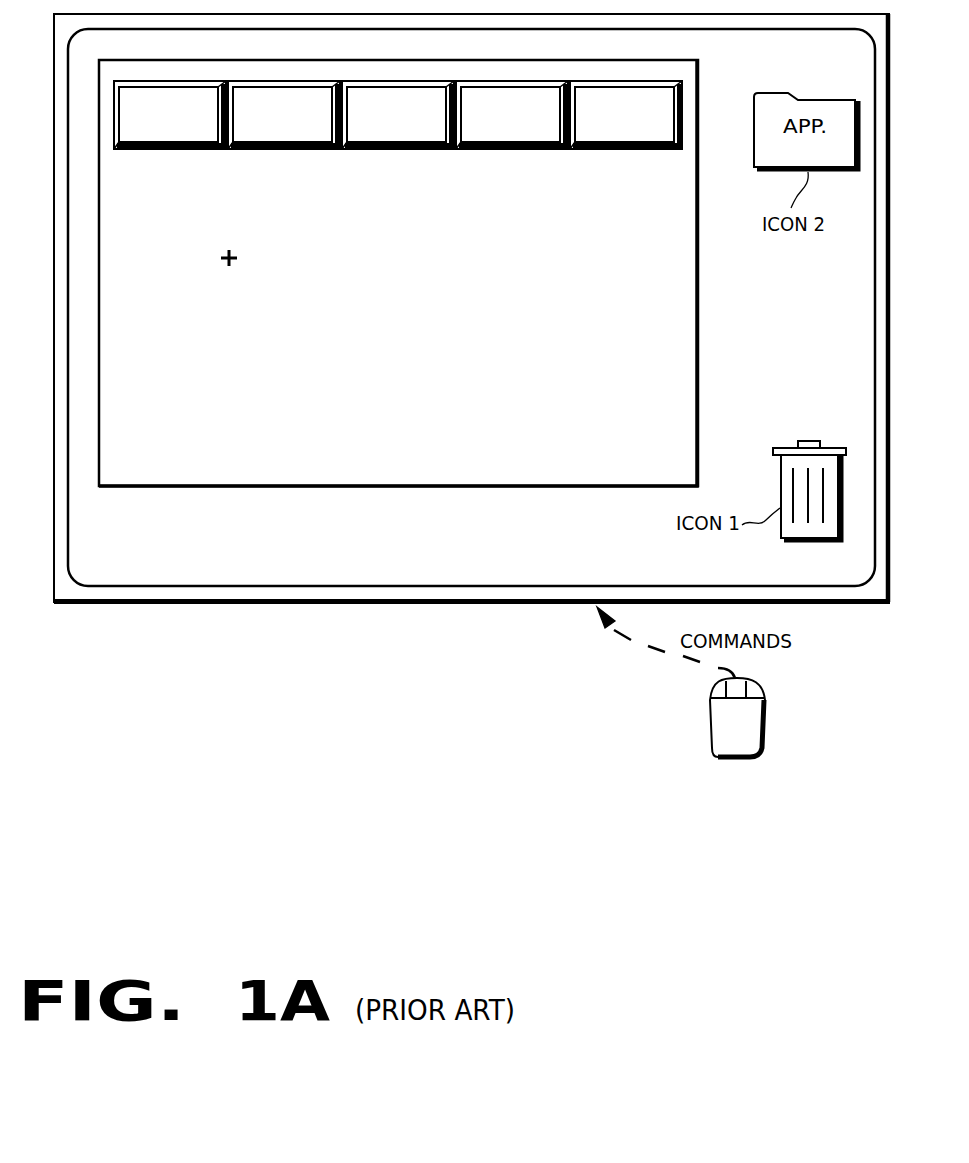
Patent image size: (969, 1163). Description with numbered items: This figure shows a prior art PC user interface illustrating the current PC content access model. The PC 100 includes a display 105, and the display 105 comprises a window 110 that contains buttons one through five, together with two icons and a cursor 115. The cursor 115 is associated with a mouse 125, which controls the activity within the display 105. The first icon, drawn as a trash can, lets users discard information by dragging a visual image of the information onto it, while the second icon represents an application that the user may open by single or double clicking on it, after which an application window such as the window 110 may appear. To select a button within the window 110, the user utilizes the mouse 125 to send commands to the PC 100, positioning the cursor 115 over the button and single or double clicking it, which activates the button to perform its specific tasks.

The PC 100 is at (241, 606).
The display 105 is at (843, 581).
The window 110 is at (690, 477).
The cursor 115 is at (236, 268).
The mouse 125 is at (770, 726).